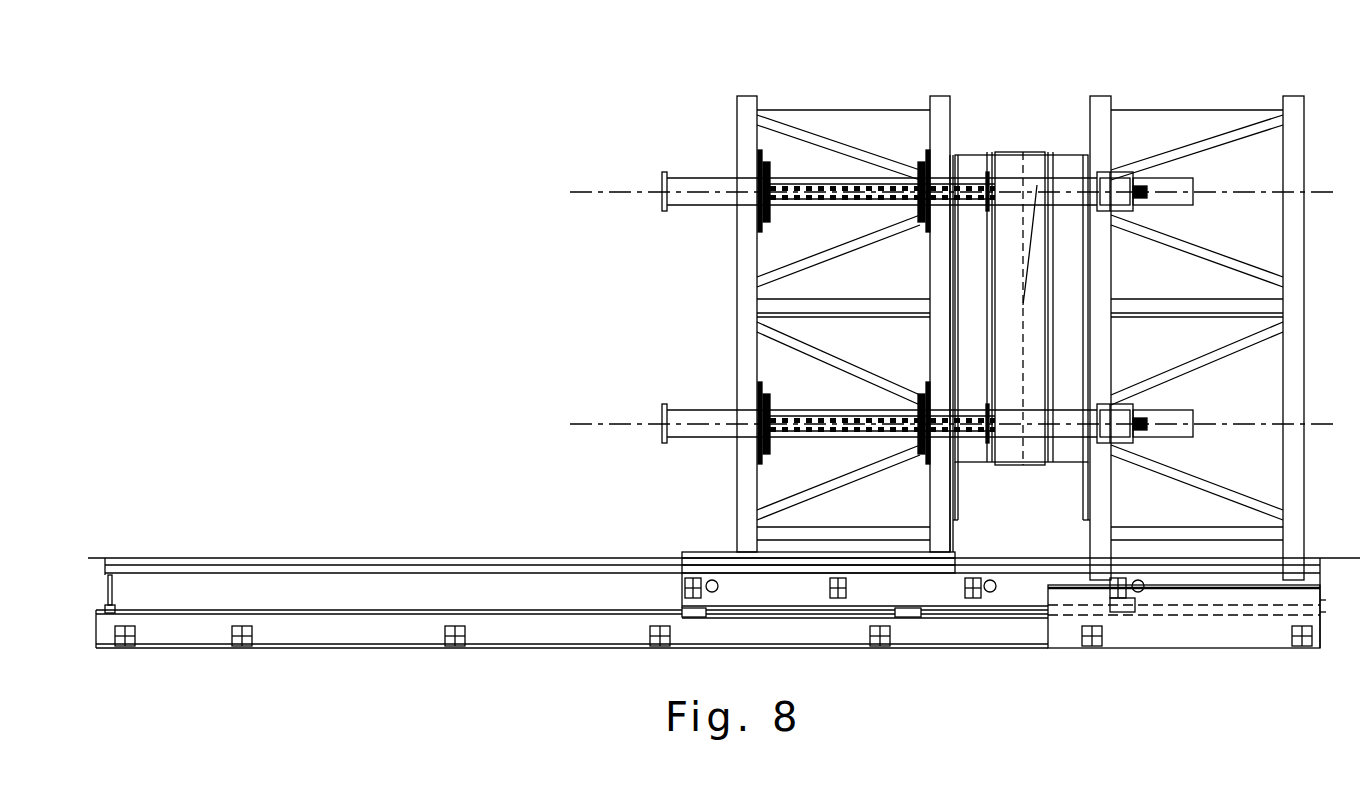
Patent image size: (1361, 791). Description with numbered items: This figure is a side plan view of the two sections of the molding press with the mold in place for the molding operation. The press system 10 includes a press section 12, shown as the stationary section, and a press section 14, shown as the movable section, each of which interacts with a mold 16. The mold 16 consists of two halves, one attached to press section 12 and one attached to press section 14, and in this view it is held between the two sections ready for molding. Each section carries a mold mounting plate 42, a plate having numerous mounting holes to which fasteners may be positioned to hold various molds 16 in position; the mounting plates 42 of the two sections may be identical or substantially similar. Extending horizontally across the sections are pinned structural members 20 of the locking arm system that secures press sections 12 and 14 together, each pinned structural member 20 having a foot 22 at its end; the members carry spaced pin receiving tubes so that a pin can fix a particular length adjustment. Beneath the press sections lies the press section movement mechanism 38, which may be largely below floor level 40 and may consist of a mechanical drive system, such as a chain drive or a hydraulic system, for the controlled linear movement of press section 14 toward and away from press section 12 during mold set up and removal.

The press system 10 is at (486, 126).
The press section 12 is at (1283, 100).
The press section 14 is at (820, 97).
The mold 16 is at (1020, 120).
The pinned structural member 20 is at (697, 207).
The foot 22 is at (1152, 438).
The press section movement mechanism 38 is at (655, 590).
The floor level 40 is at (1333, 558).
The mold mounting plate 42 is at (957, 485).